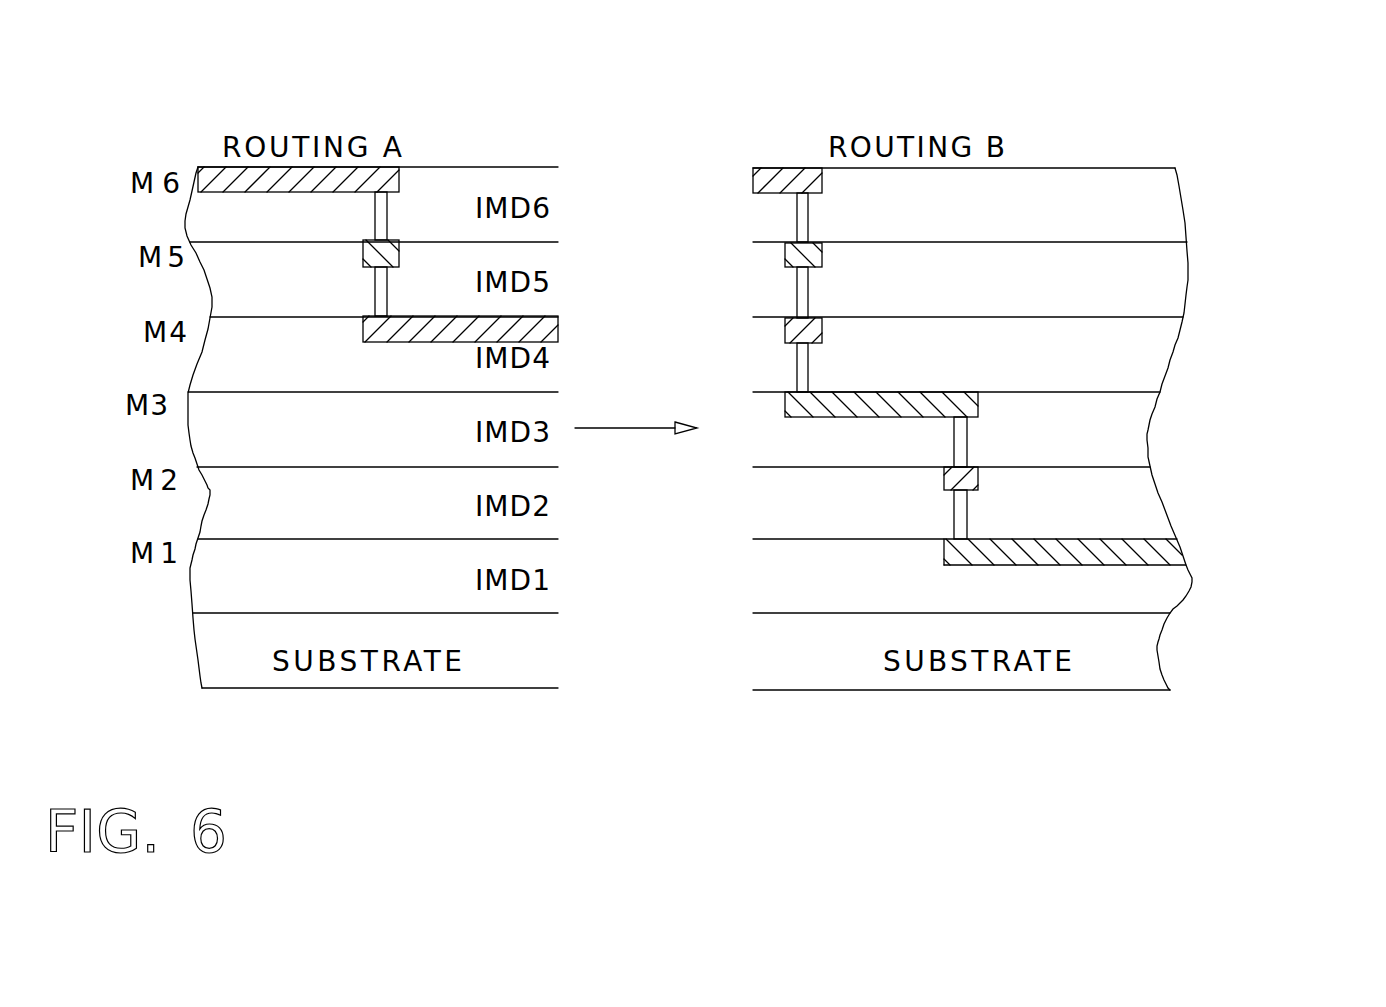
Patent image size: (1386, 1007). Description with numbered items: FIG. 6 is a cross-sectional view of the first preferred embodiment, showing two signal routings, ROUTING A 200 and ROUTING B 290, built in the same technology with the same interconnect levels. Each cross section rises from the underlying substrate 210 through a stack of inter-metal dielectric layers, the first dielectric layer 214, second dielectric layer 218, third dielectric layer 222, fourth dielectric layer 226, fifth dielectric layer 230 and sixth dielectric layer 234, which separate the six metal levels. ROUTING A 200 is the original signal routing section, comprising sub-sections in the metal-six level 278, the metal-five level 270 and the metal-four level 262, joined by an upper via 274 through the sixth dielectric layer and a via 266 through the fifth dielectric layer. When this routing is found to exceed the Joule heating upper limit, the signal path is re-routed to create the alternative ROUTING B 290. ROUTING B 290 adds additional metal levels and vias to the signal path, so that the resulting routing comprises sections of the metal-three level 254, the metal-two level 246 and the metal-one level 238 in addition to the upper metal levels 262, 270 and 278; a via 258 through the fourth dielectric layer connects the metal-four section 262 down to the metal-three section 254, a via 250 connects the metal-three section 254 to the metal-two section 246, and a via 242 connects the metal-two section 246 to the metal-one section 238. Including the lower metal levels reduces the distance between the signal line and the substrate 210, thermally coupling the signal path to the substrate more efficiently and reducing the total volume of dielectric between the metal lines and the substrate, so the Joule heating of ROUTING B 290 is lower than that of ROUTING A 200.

The routing A interconnect structure 200 is at (455, 117).
The routing B interconnect structure 290 is at (1072, 120).
The substrate 210 is at (772, 670).
The first inter-metal dielectric layer IMD1 214 is at (772, 596).
The second inter-metal dielectric layer IMD2 218 is at (772, 520).
The third inter-metal dielectric layer IMD3 222 is at (215, 433).
The fourth inter-metal dielectric layer IMD4 226 is at (215, 353).
The fifth inter-metal dielectric layer IMD5 230 is at (773, 300).
The sixth inter-metal dielectric layer IMD6 234 is at (773, 223).
The metal-1 (M1) section 238 is at (1177, 550).
The via in IMD2 242 is at (960, 527).
The metal-2 (M2) section 246 is at (978, 488).
The via in IMD3 250 is at (965, 443).
The metal-3 (M3) section 254 is at (975, 415).
The via in IMD4 258 is at (803, 360).
The metal-4 (M4) section 262 is at (785, 342).
The via in IMD5 266 is at (803, 305).
The metal-5 (M5) section 270 is at (785, 267).
The via in IMD6 274 is at (803, 232).
The metal-6 (M6) section 278 is at (782, 171).